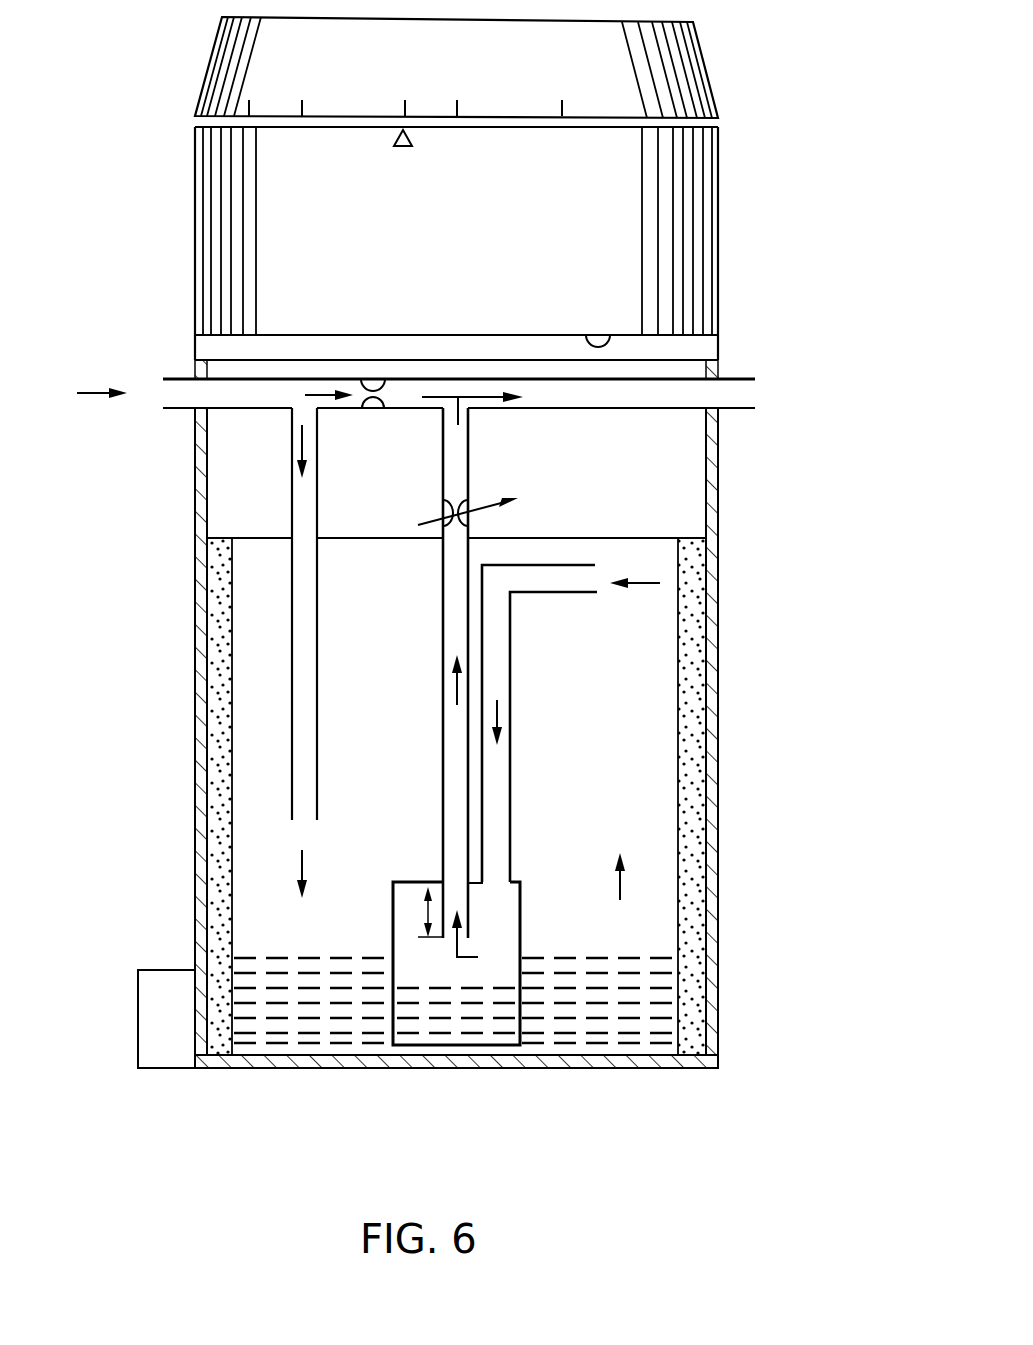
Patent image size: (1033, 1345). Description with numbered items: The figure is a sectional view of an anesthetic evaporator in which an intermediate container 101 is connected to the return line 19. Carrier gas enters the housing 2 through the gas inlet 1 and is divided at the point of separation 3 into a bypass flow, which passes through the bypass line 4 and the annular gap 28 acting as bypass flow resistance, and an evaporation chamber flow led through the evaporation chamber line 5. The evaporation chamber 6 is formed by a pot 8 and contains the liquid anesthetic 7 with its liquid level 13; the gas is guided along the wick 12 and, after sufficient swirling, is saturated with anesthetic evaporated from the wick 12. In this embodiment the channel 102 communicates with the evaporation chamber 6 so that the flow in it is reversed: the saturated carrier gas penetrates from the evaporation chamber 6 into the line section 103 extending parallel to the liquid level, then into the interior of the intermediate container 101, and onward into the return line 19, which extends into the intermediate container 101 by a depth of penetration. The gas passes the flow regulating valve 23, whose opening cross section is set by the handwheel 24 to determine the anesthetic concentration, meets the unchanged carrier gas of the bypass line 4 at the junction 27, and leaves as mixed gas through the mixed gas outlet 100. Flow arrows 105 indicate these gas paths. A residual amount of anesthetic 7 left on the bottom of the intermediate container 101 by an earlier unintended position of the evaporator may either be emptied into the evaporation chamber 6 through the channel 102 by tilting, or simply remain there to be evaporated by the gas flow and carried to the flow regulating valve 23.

The gas inlet 1 is at (175, 390).
The housing 2 is at (620, 241).
The point of separation 3 is at (307, 410).
The bypass line 4 is at (313, 379).
The evaporation chamber line 5 is at (292, 570).
The evaporation chamber 6 is at (622, 779).
The liquid anesthetic 7 is at (313, 1033).
The pot 8 is at (193, 763).
The wick 12 is at (227, 625).
The anesthetic liquid level 13 is at (270, 957).
The return line 19 is at (447, 645).
The flow regulating valve 23 is at (455, 513).
The handwheel 24 is at (683, 82).
The junction 27 is at (470, 397).
The annular gap 28 is at (373, 377).
The mixed gas outlet 100 is at (735, 398).
The intermediate container 101 is at (493, 928).
The channel 102 is at (497, 653).
The line section 103 is at (547, 582).
The flow arrows 105 is at (293, 877).